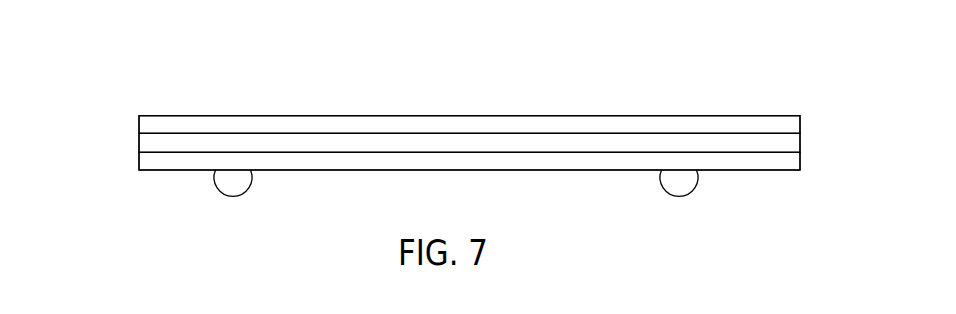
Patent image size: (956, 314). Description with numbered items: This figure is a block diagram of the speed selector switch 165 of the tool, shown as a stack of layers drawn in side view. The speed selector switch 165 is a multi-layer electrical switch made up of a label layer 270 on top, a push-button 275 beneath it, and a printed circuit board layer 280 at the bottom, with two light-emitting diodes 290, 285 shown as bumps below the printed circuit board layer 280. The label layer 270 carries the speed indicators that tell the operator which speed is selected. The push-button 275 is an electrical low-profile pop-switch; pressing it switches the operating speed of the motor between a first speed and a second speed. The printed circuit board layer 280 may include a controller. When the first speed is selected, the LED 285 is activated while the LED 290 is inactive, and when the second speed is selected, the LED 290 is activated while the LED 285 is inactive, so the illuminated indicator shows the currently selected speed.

The speed selector switch 165 is at (622, 83).
The label layer 270 is at (142, 127).
The push-button 275 is at (143, 140).
The printed circuit board layer 280 is at (143, 157).
The light-emitting diode 290 is at (228, 183).
The light-emitting diode 285 is at (680, 180).